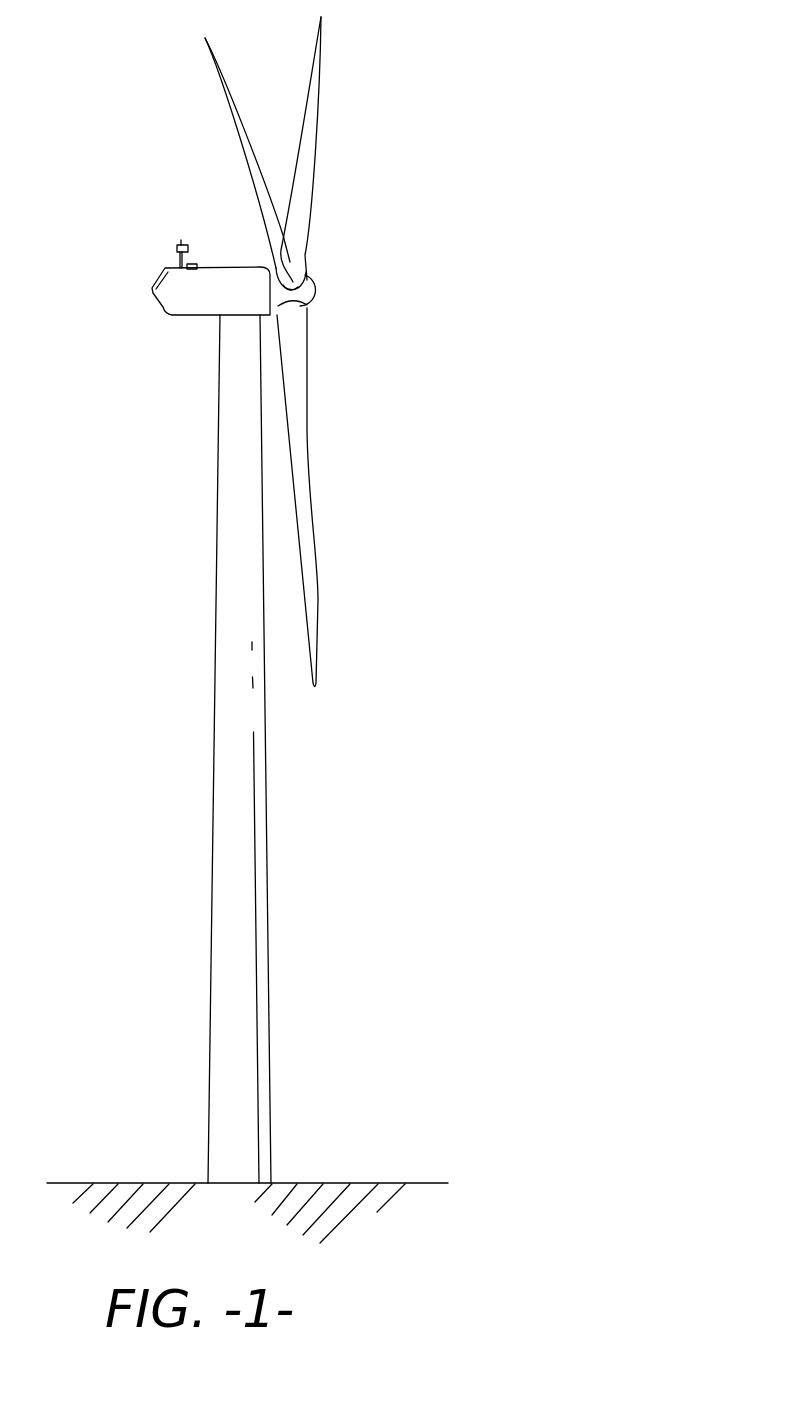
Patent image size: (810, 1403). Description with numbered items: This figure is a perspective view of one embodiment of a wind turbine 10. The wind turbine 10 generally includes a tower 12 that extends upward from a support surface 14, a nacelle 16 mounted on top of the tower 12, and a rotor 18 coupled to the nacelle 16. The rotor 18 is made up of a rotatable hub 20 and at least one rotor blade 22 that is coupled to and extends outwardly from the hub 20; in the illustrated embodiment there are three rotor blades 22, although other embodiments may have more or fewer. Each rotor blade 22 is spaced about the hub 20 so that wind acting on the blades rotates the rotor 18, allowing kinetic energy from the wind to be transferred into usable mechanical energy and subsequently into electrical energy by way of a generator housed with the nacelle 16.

The wind turbine 10 is at (285, 630).
The tower 12 is at (225, 868).
The support surface 14 is at (340, 1183).
The nacelle 16 is at (198, 317).
The rotor 18 is at (344, 302).
The rotatable hub 20 is at (318, 290).
The rotor blade 22 is at (230, 123).